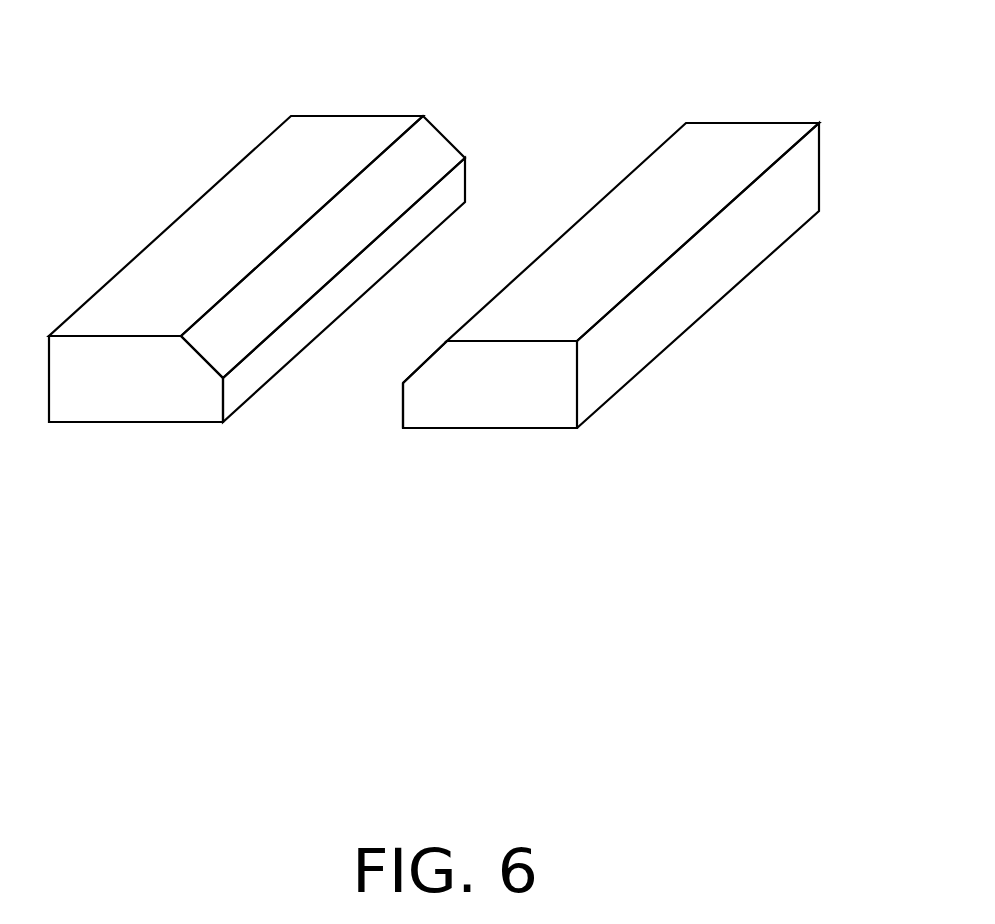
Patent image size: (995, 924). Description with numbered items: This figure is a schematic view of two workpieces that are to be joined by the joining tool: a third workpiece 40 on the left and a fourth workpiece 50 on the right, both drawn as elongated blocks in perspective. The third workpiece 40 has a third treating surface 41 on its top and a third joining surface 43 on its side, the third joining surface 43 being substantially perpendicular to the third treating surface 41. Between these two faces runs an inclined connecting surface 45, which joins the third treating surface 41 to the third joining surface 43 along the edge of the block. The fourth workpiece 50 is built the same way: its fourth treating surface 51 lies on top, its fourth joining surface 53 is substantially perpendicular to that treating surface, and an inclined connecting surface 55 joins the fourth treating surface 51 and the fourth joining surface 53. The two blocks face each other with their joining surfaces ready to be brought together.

The third workpiece 40 is at (301, 222).
The third treating surface 41 is at (220, 217).
The third joining surface 43 is at (457, 192).
The inclined connecting surface 45 is at (423, 153).
The fourth workpiece 50 is at (613, 264).
The fourth treating surface 51 is at (678, 170).
The fourth joining surface 53 is at (402, 405).
The inclined connecting surface 55 is at (423, 358).